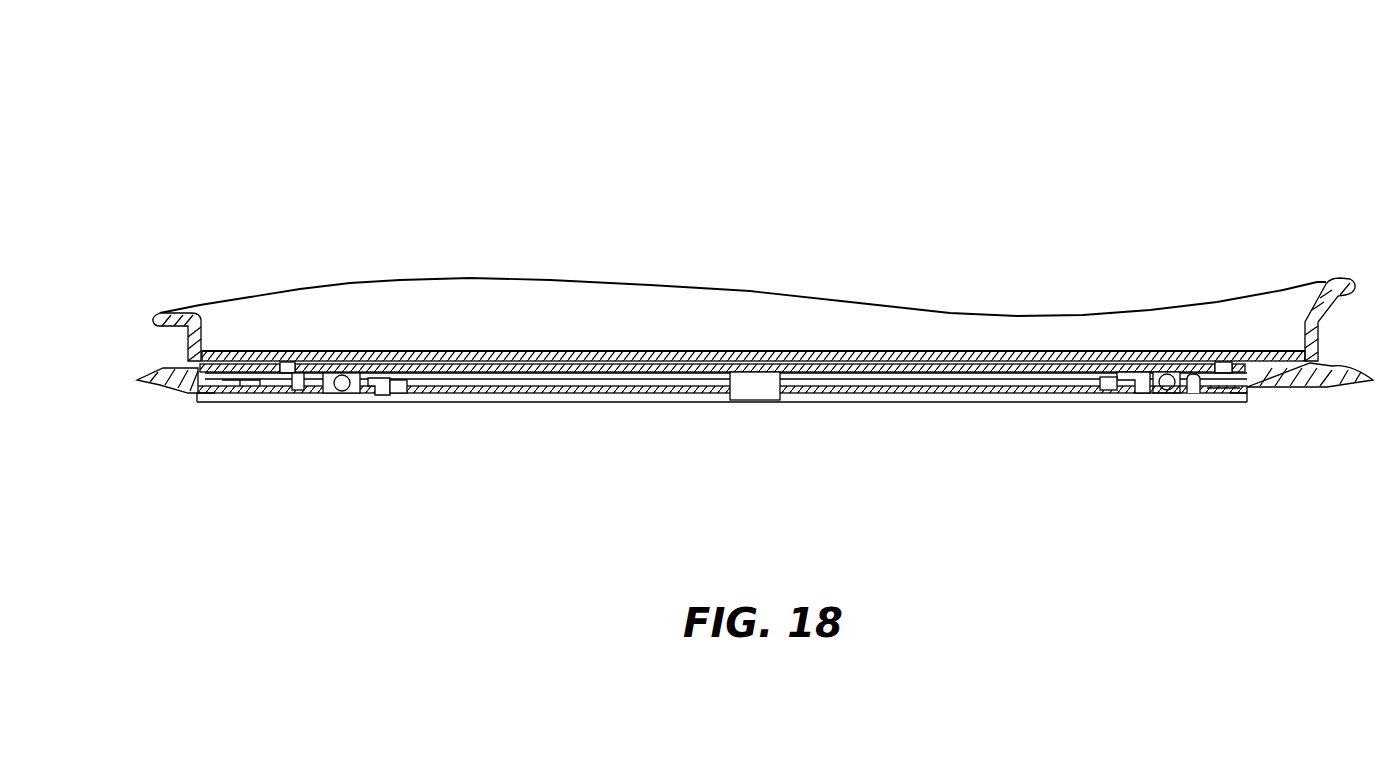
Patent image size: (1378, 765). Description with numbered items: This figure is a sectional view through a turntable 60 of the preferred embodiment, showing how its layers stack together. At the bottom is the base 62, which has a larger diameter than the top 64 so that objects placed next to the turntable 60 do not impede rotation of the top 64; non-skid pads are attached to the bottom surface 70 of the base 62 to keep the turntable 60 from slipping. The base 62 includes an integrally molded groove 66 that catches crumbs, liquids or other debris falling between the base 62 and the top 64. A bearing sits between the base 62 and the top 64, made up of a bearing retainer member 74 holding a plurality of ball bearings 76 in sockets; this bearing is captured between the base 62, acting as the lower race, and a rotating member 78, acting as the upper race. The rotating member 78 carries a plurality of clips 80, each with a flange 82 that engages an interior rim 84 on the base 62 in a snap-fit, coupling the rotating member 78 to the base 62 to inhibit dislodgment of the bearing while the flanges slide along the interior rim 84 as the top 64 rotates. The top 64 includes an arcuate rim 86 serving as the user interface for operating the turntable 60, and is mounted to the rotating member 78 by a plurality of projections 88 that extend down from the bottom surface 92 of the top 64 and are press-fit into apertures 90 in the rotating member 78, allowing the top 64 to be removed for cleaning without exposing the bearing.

The turntable 60 is at (1220, 107).
The base 62 is at (150, 379).
The top 64 is at (153, 323).
The groove 66 is at (301, 392).
The bottom surface 70 is at (285, 409).
The bearing retainer member 74 is at (1167, 394).
The ball bearings 76 is at (343, 394).
The rotating member 78 is at (207, 394).
The clips 80 is at (400, 394).
The flange 82 is at (379, 396).
The interior rim 84 is at (430, 351).
The arcuate rim 86 is at (352, 284).
The projections 88 is at (246, 394).
The apertures 90 is at (283, 364).
The bottom surface 92 is at (889, 366).